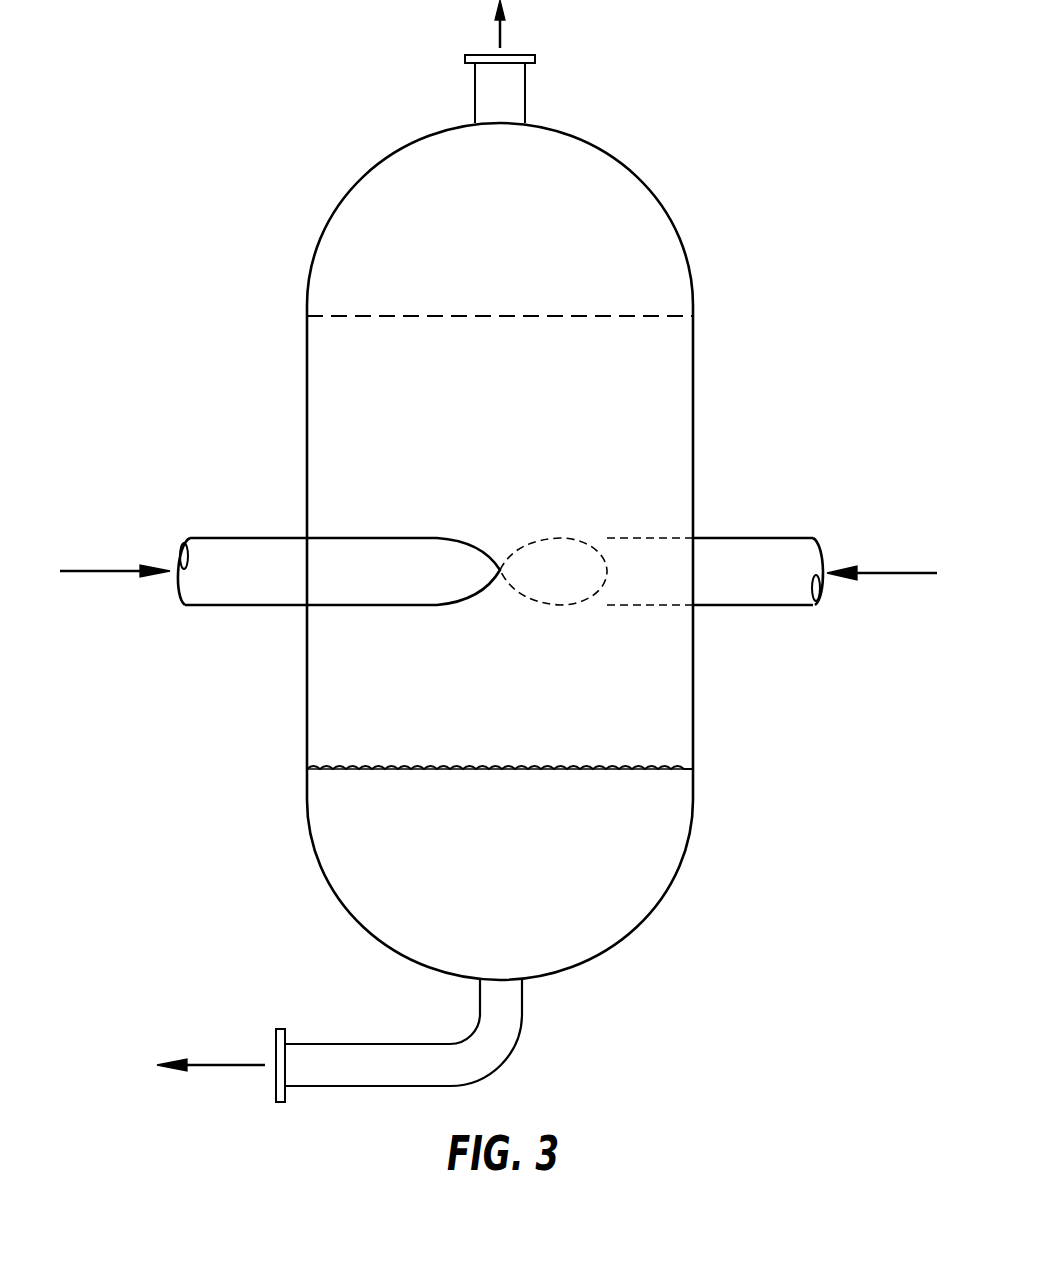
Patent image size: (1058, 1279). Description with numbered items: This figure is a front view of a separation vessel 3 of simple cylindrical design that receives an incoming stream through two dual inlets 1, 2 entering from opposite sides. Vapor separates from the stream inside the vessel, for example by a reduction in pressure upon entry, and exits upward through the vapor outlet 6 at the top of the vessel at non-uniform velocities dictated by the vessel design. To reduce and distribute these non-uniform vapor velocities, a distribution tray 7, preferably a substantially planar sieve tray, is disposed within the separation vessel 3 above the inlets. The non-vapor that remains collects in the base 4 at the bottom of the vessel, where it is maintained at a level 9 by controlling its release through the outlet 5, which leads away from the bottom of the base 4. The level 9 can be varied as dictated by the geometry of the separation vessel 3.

The inlet 1 is at (250, 537).
The inlet 2 is at (744, 537).
The separation vessel 3 is at (337, 207).
The base 4 is at (325, 797).
The outlet 5 is at (375, 1044).
The vapor outlet 6 is at (476, 90).
The distribution tray 7 is at (556, 316).
The level 9 is at (664, 762).